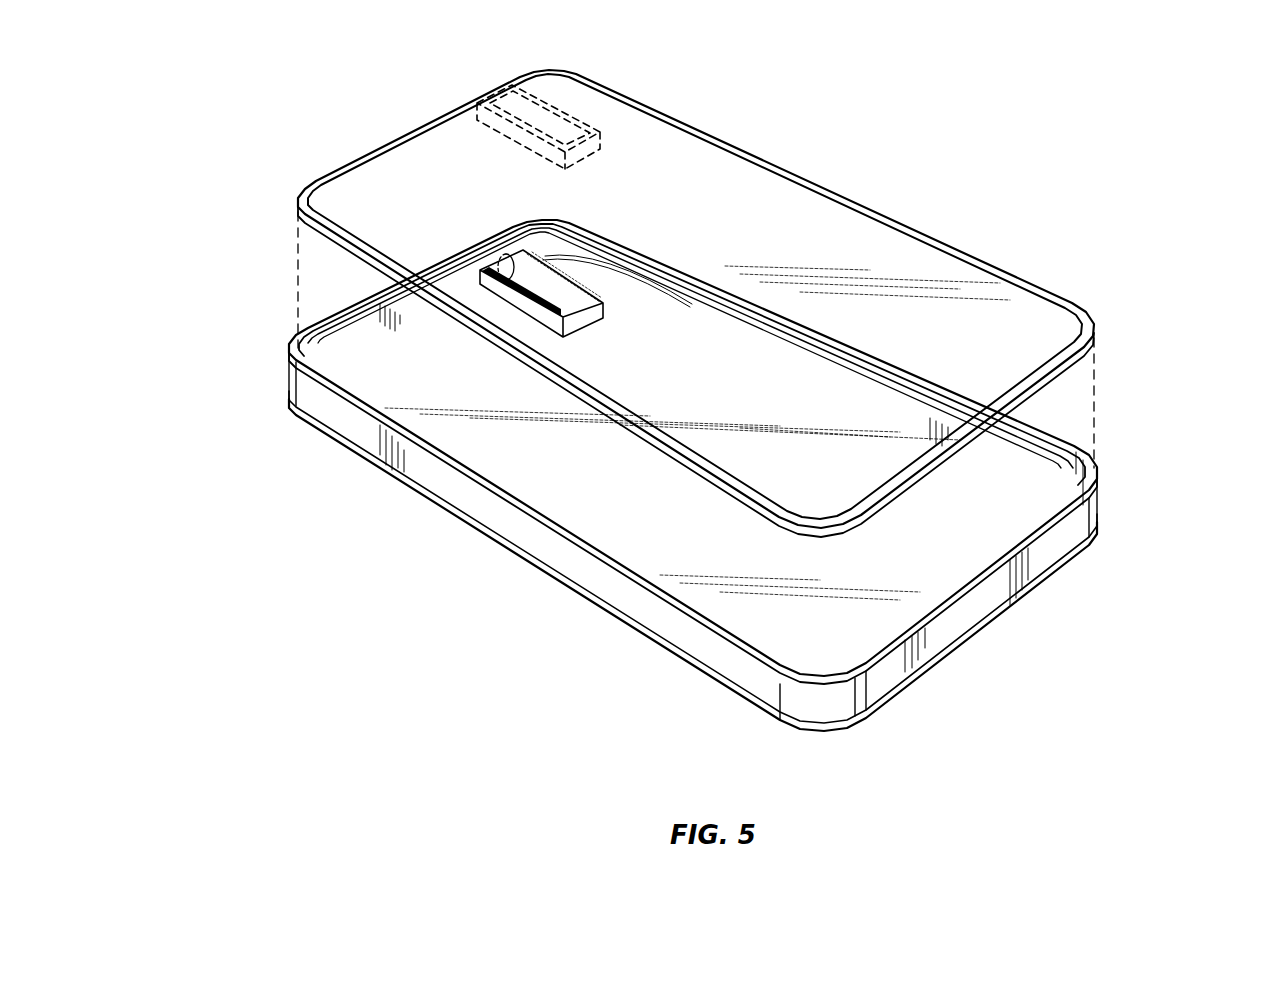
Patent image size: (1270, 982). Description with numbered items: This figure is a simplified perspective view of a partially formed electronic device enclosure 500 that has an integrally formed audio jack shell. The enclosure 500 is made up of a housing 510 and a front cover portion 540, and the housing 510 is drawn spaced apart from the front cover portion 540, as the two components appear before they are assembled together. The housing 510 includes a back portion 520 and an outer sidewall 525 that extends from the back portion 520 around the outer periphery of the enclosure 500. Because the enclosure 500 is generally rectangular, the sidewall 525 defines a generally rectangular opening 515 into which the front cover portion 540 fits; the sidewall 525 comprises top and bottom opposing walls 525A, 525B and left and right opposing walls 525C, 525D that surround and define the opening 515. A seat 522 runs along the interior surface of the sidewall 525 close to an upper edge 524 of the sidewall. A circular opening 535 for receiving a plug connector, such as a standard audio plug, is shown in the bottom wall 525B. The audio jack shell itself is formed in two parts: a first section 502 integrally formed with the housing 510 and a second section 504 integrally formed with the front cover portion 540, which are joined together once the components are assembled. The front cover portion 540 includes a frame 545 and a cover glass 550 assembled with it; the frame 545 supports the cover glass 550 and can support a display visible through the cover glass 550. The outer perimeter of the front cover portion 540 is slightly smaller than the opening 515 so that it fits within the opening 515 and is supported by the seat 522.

The electronic device enclosure 500 is at (1070, 232).
The first section 502 is at (597, 326).
The second section 504 is at (590, 155).
The housing 510 is at (343, 448).
The opening 515 is at (555, 461).
The back portion 520 is at (927, 558).
The seat 522 is at (305, 343).
The upper edge 524 is at (357, 399).
The outer sidewall 525 is at (532, 537).
The top wall 525A is at (972, 610).
The bottom wall 525B is at (337, 312).
The left wall 525C is at (1060, 447).
The right wall 525D is at (742, 680).
The circular opening 535 is at (500, 262).
The front cover portion 540 is at (300, 190).
The frame 545 is at (698, 122).
The cover glass 550 is at (800, 250).